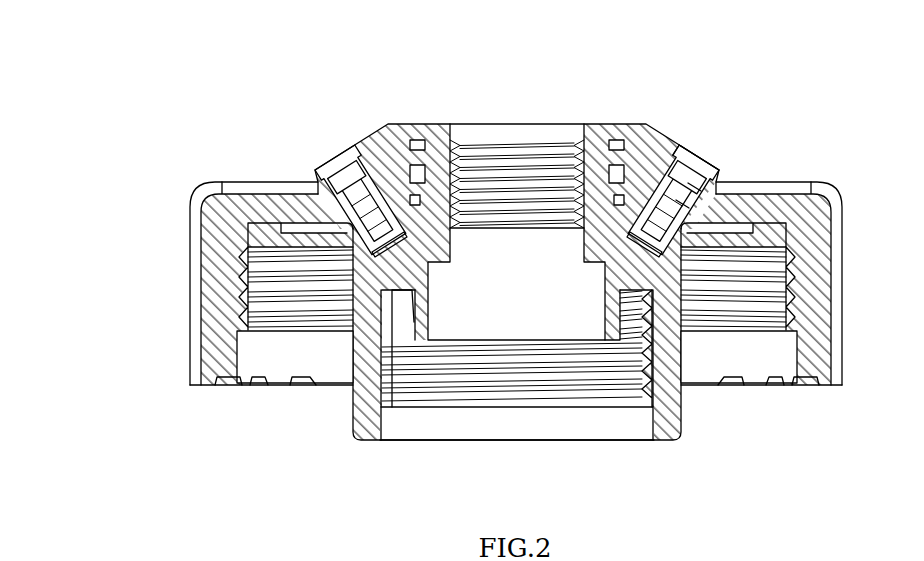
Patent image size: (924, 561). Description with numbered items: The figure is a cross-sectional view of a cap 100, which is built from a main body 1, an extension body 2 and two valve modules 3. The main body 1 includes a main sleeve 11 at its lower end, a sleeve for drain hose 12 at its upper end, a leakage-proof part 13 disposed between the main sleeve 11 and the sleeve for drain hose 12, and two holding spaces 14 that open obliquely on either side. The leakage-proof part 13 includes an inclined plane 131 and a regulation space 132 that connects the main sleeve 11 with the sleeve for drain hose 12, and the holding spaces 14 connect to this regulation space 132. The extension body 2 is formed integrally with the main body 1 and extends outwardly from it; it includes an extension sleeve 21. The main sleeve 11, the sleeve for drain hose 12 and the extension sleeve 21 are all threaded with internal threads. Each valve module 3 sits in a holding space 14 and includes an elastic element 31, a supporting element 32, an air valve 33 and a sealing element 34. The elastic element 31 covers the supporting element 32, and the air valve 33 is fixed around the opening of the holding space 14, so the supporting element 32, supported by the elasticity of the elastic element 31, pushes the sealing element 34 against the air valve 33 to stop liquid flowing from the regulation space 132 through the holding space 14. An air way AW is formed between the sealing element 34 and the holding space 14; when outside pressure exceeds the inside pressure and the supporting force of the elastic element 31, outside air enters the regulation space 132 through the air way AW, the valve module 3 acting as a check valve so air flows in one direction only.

The cap 100 is at (499, 258).
The main body 1 is at (683, 414).
The main sleeve 11 is at (553, 432).
The sleeve for drain hose 12 is at (522, 115).
The leakage-proof part 13 is at (440, 308).
The inclined plane 131 is at (385, 318).
The regulation space 132 is at (500, 325).
The holding space 14 is at (645, 165).
The extension body 2 is at (208, 345).
The extension sleeve 21 is at (277, 345).
The valve module 3 is at (728, 135).
The elastic element 31 is at (706, 235).
The supporting element 32 is at (641, 172).
The air valve 33 is at (672, 150).
The sealing element 34 is at (700, 155).
The air way AW is at (659, 160).